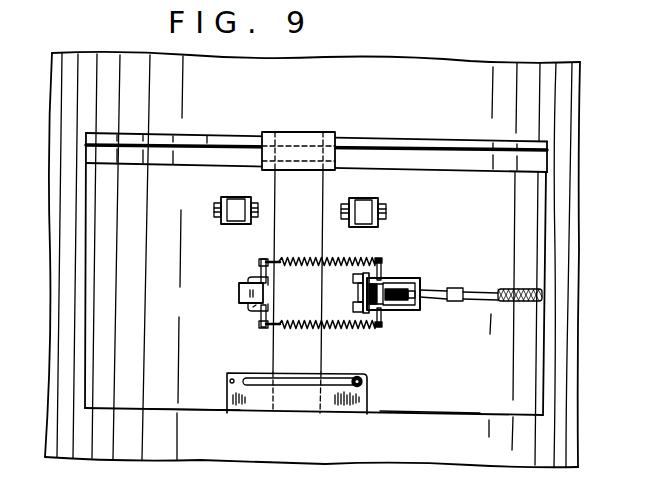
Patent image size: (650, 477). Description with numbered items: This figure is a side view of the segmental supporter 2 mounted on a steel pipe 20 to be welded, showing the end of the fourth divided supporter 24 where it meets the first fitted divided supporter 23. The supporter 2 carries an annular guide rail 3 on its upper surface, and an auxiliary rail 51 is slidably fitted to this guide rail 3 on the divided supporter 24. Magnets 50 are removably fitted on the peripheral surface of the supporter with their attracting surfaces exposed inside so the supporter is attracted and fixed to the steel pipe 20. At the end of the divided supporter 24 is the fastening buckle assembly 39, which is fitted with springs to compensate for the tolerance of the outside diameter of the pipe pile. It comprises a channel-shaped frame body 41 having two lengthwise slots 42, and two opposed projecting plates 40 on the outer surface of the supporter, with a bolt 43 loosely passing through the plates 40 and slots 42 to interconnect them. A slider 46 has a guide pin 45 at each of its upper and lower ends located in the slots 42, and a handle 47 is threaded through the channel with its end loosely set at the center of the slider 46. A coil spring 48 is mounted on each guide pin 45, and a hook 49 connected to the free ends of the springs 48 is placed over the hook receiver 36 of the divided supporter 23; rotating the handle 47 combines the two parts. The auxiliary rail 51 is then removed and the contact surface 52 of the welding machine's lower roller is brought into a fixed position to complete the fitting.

The steel pipe 20 is at (64, 99).
The supporter 2 is at (488, 388).
The guide rail 3 is at (393, 140).
The auxiliary rail 51 is at (292, 130).
The magnet 50 is at (233, 199).
The fastening buckle assembly 39 is at (459, 232).
The hook receiver 36 is at (238, 288).
The hook 49 is at (253, 307).
The coil spring 48 is at (302, 259).
The bolt 43 is at (354, 274).
The guide pin 45 is at (381, 263).
The slot 42 is at (401, 278).
The frame body 41 is at (412, 310).
The slider 46 is at (383, 304).
The projecting plate 40 is at (353, 290).
The handle 47 is at (509, 289).
The contact surface 52 is at (297, 403).
The divided supporter 23 is at (195, 398).
The divided supporter 24 is at (430, 404).